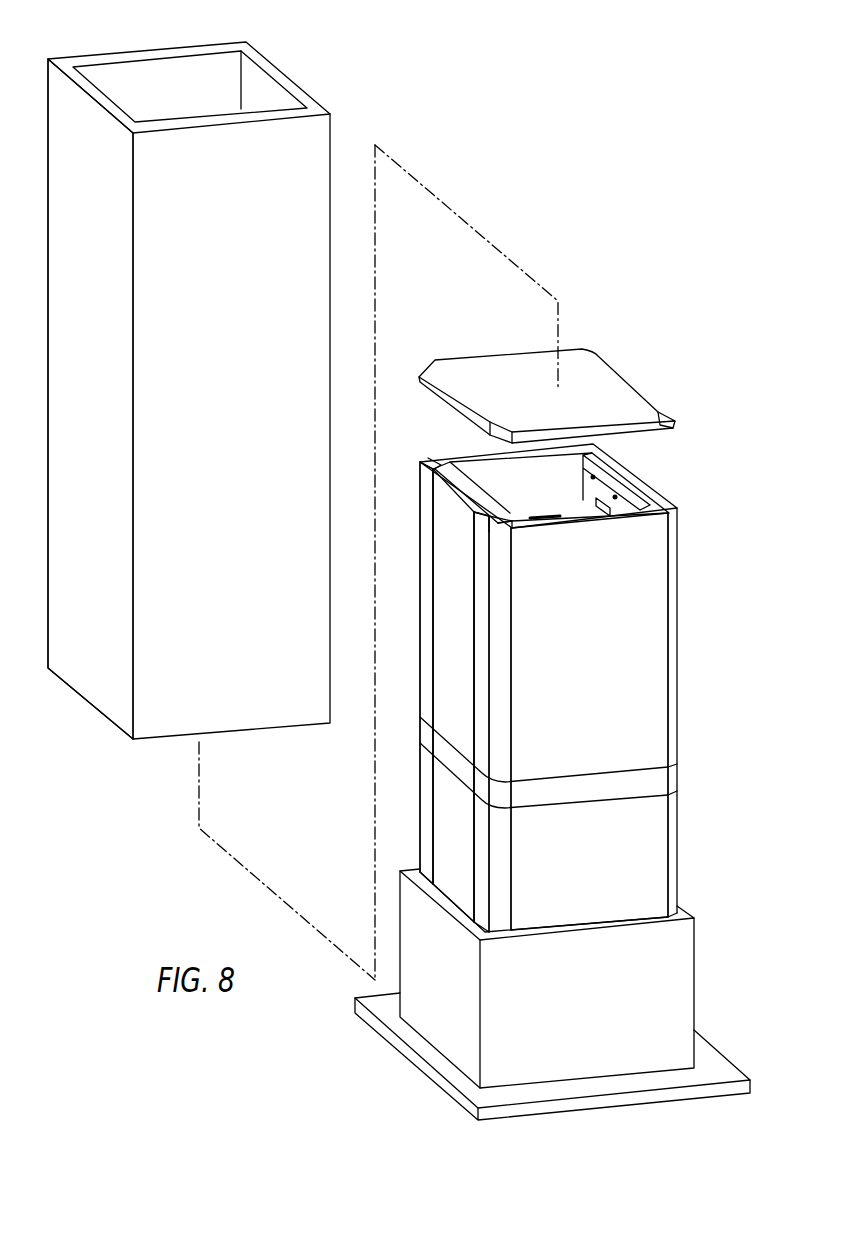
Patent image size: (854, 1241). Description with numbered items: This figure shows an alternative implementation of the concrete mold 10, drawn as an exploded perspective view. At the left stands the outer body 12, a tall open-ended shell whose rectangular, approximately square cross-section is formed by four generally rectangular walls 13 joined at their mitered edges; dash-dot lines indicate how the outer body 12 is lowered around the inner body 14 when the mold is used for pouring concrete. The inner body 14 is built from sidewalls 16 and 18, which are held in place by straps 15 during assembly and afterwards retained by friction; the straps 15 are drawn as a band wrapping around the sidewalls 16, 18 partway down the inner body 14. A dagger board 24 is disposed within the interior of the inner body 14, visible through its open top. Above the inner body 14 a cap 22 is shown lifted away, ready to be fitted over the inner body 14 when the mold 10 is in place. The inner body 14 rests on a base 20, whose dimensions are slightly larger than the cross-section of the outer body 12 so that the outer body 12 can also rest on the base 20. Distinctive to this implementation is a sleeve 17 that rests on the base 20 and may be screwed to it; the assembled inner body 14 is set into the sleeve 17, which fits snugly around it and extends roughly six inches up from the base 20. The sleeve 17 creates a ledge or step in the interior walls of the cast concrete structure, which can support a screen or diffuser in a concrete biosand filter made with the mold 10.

The mold 10 is at (531, 150).
The outer body 12 is at (182, 375).
The walls 13 is at (102, 367).
The inner body 14 is at (578, 678).
The straps 15 is at (656, 779).
The sidewalls 16 is at (597, 644).
The sleeve 17 is at (673, 972).
The sidewalls 18 is at (462, 607).
The base 20 is at (721, 1080).
The cap 22 is at (524, 395).
The dagger board 24 is at (517, 505).